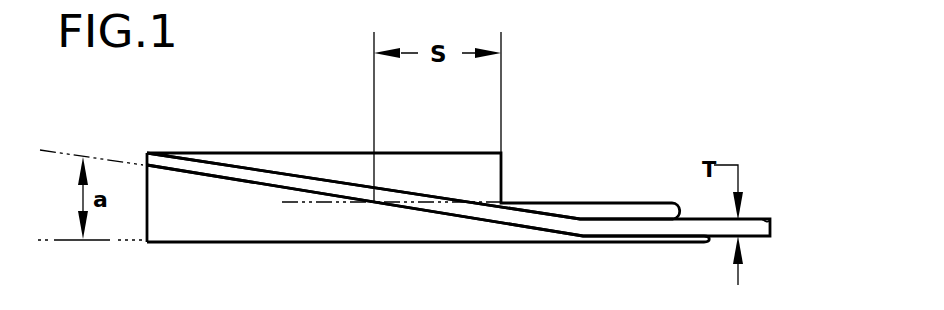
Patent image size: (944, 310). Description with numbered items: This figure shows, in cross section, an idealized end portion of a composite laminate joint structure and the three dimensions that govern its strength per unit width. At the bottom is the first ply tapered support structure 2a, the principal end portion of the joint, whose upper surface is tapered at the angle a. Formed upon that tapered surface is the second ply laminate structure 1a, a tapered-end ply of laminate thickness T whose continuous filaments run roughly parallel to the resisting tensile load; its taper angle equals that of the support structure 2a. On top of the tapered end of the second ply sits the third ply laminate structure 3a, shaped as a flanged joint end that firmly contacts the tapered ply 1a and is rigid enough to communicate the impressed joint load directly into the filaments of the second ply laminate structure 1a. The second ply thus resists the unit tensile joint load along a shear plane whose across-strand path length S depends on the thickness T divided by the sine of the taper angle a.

The second ply laminate structure 1a is at (803, 193).
The first ply tapered support structure 2a is at (244, 242).
The third ply laminate structure 3a is at (279, 152).